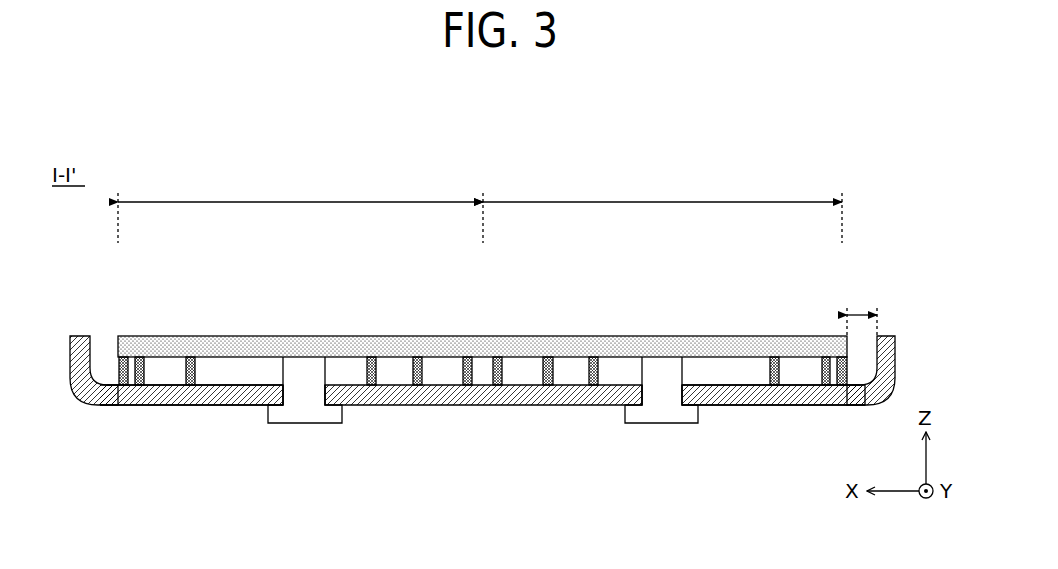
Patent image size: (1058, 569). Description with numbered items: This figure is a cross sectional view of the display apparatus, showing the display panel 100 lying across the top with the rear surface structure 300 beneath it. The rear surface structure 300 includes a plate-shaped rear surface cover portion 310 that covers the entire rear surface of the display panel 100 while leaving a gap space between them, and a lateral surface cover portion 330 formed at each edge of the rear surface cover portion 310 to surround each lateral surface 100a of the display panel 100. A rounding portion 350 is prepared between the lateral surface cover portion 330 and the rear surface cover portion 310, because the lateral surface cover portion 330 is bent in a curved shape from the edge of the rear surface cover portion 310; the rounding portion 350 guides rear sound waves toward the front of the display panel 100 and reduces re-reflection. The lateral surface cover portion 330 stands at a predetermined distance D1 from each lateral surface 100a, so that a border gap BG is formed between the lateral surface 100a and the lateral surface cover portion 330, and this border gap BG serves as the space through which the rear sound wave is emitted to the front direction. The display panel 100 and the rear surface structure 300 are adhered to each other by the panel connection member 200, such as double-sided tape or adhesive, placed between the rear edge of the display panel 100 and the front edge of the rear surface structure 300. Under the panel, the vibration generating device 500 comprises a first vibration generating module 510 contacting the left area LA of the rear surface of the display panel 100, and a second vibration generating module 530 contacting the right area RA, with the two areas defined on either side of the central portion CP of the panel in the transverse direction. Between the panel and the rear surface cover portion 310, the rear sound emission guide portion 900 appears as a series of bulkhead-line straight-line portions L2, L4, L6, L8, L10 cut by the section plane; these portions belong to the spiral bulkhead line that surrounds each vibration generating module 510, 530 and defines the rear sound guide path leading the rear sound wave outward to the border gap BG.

The display panel 100 is at (237, 393).
The lateral surface of the display panel 100a is at (110, 353).
The panel connection member 200 is at (880, 372).
The rear surface structure 300 is at (116, 421).
The rear surface cover portion 310 is at (155, 435).
The lateral surface cover portion 330 is at (66, 372).
The rounding portion 350 is at (97, 393).
The vibration generating device 500 is at (483, 441).
The first vibration generating module 510 is at (318, 423).
The second vibration generating module 530 is at (661, 421).
The rear sound emission guide portion 900 is at (435, 280).
The border gap BG is at (102, 354).
The second straight-line portion L2 is at (367, 370).
The fourth straight-line portion L4 is at (197, 370).
The sixth straight-line portion L6 is at (413, 370).
The eighth straight-line portion L8 is at (147, 370).
The tenth straight-line portion L10 is at (463, 370).
The predetermined distance D1 is at (861, 310).
The left area LA is at (300, 207).
The central portion CP is at (482, 204).
The right area RA is at (662, 207).